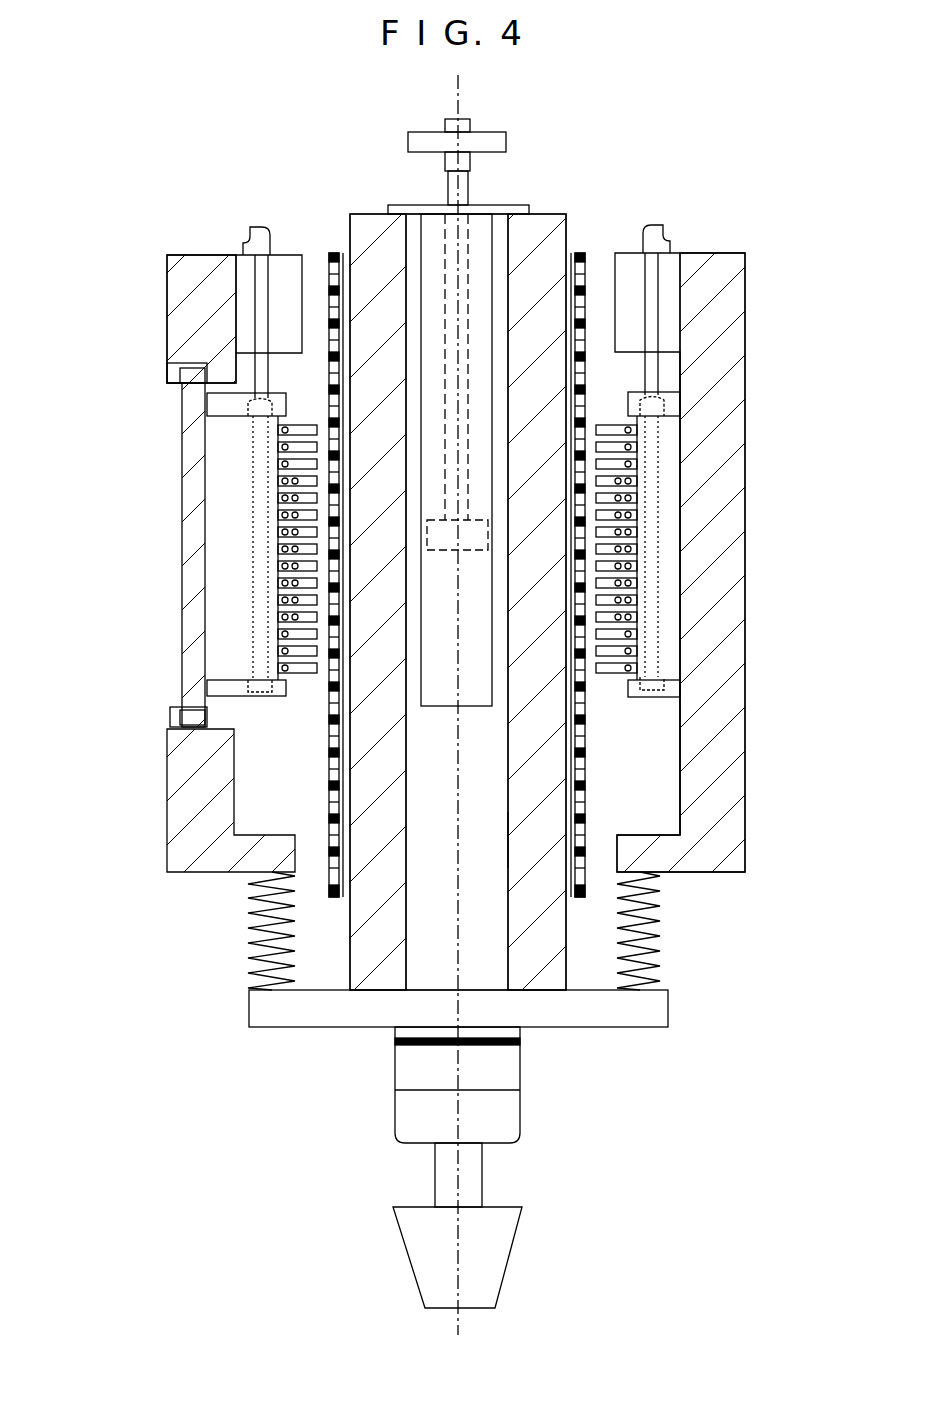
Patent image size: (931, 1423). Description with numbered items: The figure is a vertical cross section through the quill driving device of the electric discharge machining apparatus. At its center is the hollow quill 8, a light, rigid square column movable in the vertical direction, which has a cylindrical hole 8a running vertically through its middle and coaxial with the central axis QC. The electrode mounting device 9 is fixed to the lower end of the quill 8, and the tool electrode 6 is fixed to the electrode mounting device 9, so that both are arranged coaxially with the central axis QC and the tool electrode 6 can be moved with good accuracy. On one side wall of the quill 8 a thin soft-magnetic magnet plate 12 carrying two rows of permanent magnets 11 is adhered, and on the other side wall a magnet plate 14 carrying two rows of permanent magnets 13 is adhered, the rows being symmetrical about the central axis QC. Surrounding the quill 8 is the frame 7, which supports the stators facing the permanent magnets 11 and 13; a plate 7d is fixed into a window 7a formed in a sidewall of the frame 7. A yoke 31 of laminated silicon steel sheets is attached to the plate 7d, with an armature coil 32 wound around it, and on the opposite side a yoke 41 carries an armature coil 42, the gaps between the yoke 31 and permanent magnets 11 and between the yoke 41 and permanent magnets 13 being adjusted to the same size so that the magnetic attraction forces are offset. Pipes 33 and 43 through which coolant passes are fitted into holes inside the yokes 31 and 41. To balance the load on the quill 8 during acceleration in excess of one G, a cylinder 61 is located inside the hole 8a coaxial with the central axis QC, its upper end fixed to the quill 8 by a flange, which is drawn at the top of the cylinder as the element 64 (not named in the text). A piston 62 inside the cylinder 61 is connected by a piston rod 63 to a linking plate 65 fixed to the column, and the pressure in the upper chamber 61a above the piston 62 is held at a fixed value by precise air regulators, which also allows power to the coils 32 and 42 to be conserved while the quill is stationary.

The tool electrode 6 is at (420, 1252).
The frame 7 is at (732, 285).
The window 7a is at (213, 707).
The plate 7d is at (190, 468).
The quill 8 is at (537, 923).
The cylindrical hole 8a is at (508, 868).
The electrode mounting device 9 is at (392, 1090).
The permanent magnets 11 is at (345, 262).
The magnet plate 12 is at (333, 280).
The permanent magnets 13 is at (585, 318).
The magnet plate 14 is at (567, 258).
The yoke 31 is at (283, 628).
The armature coil 32 is at (283, 582).
The pipes 33 is at (260, 350).
The yoke 41 is at (632, 470).
The armature coil 42 is at (632, 530).
The pipes 43 is at (645, 353).
The cylinder 61 is at (490, 565).
The upper chamber 61a is at (480, 355).
The piston 62 is at (470, 529).
The piston rod 63 is at (456, 192).
The top plate 64 is at (490, 207).
The linking plate 65 is at (416, 142).
The central axis QC is at (458, 104).